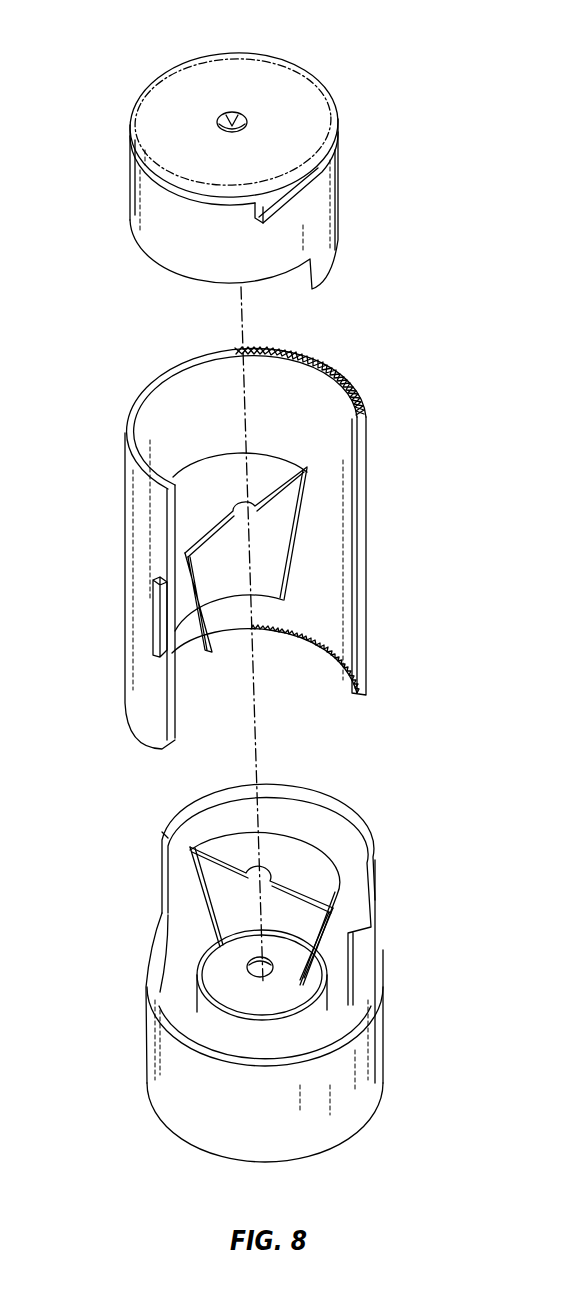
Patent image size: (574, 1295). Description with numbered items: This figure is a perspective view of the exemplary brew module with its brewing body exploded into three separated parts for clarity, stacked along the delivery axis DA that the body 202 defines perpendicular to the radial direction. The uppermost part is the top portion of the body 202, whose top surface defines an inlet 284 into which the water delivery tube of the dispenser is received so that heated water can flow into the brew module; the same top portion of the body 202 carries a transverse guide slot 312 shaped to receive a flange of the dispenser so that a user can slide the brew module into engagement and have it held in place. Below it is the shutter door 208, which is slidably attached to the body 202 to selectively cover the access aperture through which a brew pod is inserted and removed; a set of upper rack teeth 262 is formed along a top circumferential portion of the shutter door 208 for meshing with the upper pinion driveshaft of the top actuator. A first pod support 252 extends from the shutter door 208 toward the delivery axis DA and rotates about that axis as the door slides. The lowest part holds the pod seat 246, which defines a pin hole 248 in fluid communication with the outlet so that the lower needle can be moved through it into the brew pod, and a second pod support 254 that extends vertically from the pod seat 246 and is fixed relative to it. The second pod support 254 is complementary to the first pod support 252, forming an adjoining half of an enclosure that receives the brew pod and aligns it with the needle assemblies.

The body 202 is at (233, 144).
The inlet 284 is at (233, 110).
The transverse guide slot 312 is at (322, 182).
The shutter door 208 is at (239, 529).
The upper rack teeth 262 is at (350, 368).
The first pod support 252 is at (298, 526).
The delivery axis DA is at (257, 745).
The second pod support 254 is at (317, 870).
The pod seat 246 is at (217, 982).
The pin hole 248 is at (280, 990).